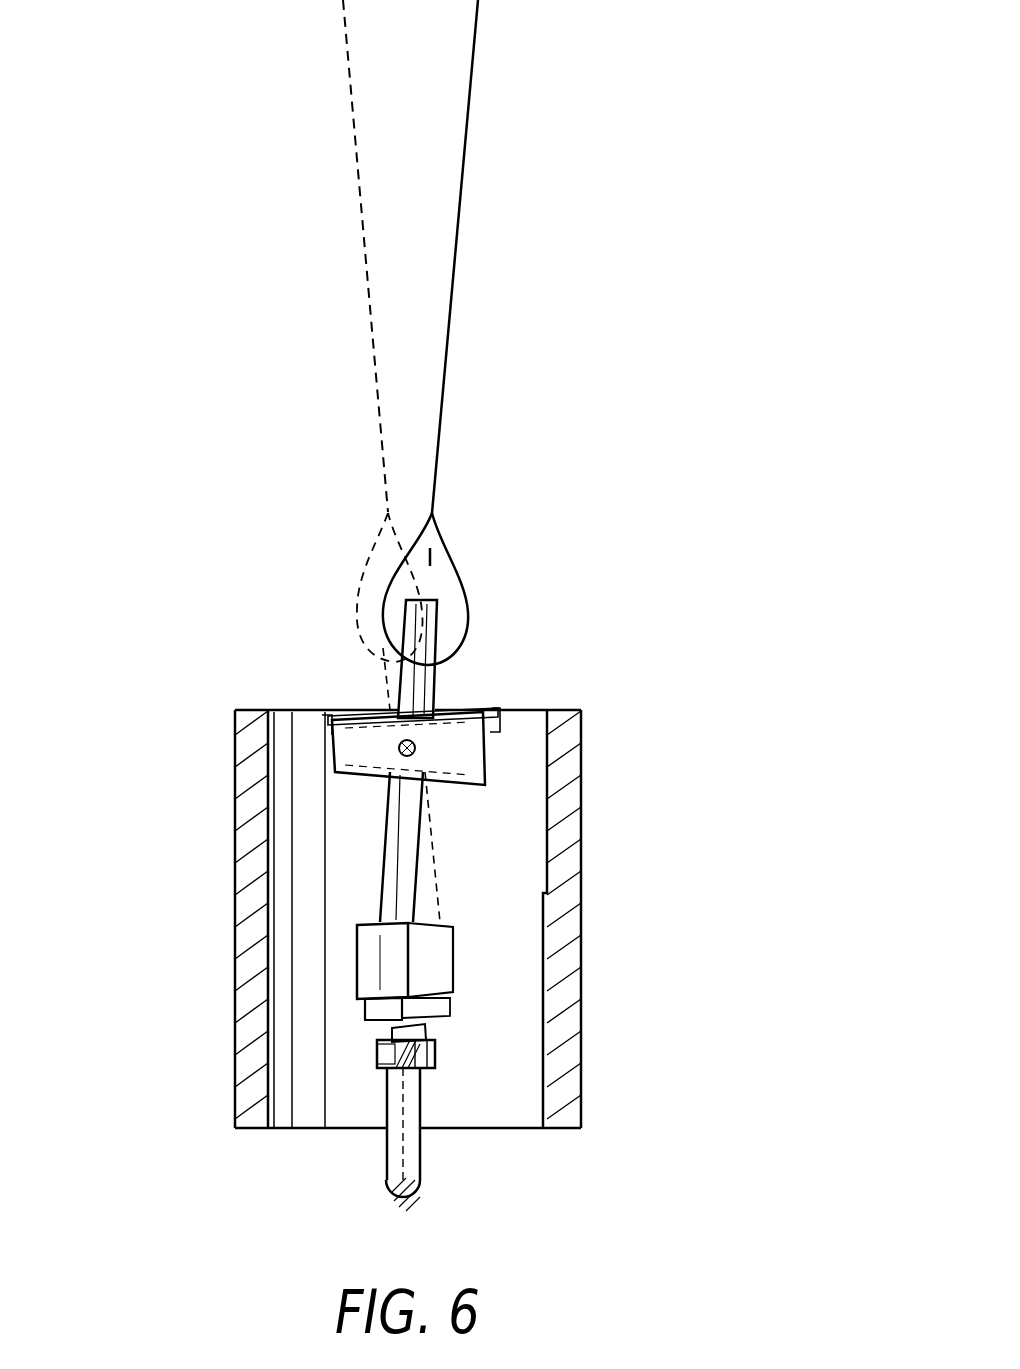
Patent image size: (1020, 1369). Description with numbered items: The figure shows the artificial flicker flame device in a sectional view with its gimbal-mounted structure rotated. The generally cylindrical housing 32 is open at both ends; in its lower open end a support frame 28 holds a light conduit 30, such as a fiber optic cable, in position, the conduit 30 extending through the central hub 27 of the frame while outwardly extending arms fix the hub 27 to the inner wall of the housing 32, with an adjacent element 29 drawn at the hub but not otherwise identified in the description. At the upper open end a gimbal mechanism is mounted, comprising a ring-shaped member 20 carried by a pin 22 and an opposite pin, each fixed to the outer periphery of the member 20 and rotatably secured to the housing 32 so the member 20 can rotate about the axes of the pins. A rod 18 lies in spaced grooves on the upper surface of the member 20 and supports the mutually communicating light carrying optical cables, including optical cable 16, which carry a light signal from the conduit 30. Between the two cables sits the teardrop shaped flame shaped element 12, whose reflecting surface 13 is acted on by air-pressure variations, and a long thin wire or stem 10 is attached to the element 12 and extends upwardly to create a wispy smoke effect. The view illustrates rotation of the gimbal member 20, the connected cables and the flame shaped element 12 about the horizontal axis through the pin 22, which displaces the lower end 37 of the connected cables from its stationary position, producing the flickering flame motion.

The stem 10 is at (462, 222).
The flame shaped element 12 is at (478, 505).
The reflecting surface 13 is at (450, 585).
The optical cable 16 is at (440, 675).
The rod 18 is at (332, 708).
The ring-shaped member 20 is at (477, 762).
The pin 22 is at (410, 748).
The central hub 27 is at (437, 1059).
The support frame 28 is at (377, 1057).
The plate 29 is at (412, 1027).
The light conduit 30 is at (422, 1157).
The housing 32 is at (580, 898).
The lower end 37 is at (327, 1023).